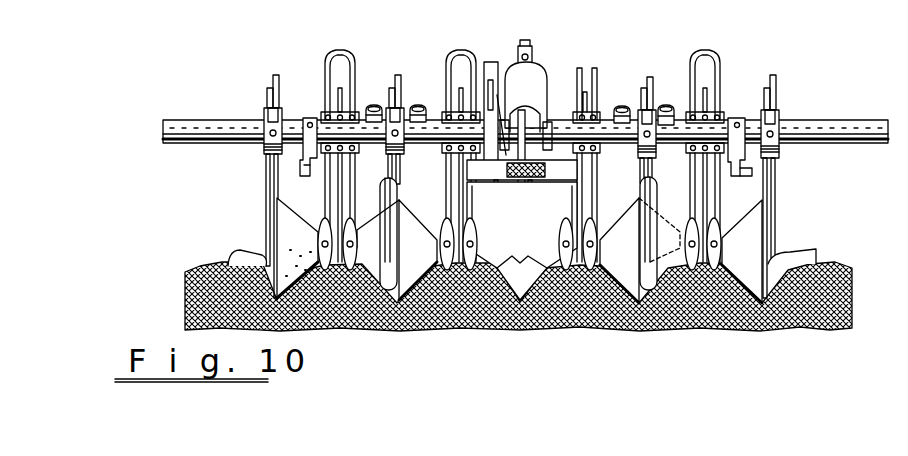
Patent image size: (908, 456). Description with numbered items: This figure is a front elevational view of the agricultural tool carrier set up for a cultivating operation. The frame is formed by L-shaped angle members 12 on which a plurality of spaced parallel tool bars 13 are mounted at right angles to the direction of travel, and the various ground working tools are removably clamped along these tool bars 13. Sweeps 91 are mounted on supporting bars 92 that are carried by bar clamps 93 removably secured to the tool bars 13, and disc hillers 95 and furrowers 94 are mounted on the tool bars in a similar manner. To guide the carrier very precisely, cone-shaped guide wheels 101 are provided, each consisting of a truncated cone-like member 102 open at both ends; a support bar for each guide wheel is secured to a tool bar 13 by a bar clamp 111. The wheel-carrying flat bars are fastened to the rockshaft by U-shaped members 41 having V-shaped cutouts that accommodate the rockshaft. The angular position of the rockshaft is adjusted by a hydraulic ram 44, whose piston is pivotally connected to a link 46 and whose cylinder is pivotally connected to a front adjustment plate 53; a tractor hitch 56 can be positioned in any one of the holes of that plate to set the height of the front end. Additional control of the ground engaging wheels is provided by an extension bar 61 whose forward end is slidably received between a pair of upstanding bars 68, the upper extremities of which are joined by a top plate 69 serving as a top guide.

The L-shaped angle member 12 is at (558, 179).
The tool bar 13 is at (848, 120).
The U-shaped member 41 is at (370, 106).
The hydraulic ram 44 is at (528, 78).
The link 46 is at (528, 46).
The front adjustment plate 53 is at (525, 221).
The tractor hitch 56 is at (531, 181).
The extension bar 61 is at (494, 80).
The upstanding bar 68 is at (497, 181).
The top plate 69 is at (487, 62).
The sweep 91 is at (360, 284).
The supporting bar 92 is at (340, 56).
The bar clamp 93 is at (597, 112).
The furrower 94 is at (242, 257).
The disc hiller 95 is at (320, 236).
The cone-shaped guide wheel 101 is at (415, 214).
The truncated cone-like member 102 is at (302, 249).
The bar clamp 111 is at (266, 118).